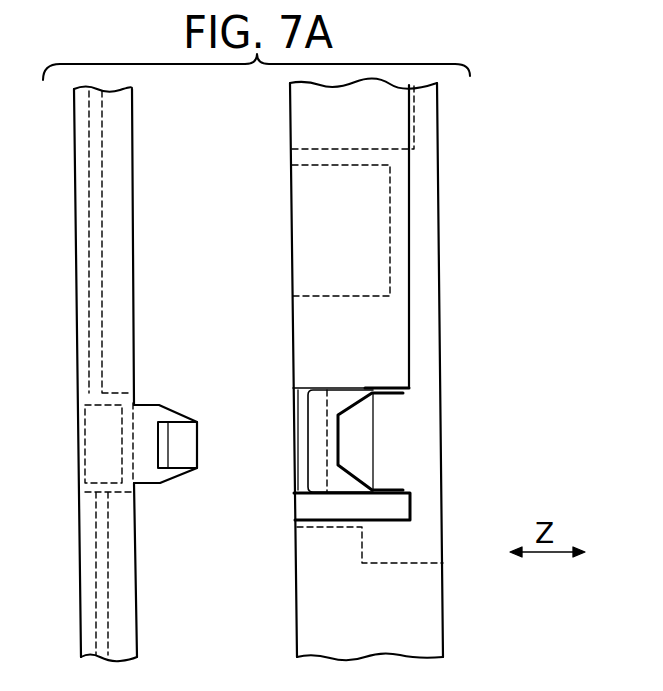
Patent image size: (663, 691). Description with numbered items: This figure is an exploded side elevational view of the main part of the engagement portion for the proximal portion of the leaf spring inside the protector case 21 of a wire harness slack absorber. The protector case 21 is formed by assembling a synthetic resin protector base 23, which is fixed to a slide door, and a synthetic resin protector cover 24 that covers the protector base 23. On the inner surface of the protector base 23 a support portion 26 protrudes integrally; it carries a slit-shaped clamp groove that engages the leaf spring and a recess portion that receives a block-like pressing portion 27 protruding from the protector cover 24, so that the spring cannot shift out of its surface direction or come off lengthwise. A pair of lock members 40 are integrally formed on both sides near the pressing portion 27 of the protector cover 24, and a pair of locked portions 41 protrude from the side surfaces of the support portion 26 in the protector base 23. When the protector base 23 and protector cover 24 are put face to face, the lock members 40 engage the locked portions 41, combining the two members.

The protector case 21 is at (255, 178).
The protector base 23 is at (318, 262).
The protector cover 24 is at (115, 272).
The support portion 26 is at (398, 414).
The pressing portion 27 is at (128, 447).
The lock member 40 is at (182, 453).
The locked portion 41 is at (335, 440).